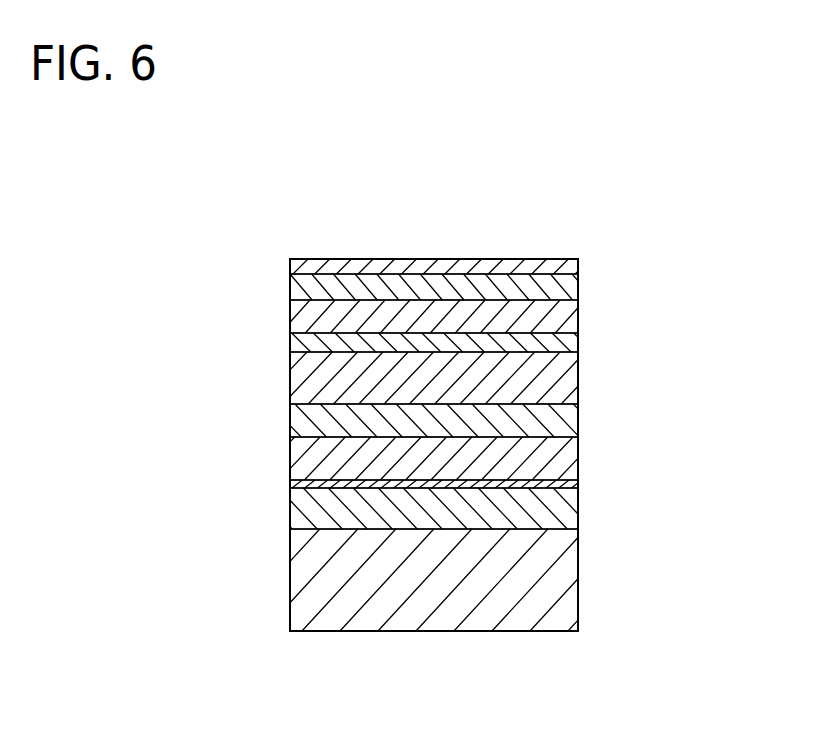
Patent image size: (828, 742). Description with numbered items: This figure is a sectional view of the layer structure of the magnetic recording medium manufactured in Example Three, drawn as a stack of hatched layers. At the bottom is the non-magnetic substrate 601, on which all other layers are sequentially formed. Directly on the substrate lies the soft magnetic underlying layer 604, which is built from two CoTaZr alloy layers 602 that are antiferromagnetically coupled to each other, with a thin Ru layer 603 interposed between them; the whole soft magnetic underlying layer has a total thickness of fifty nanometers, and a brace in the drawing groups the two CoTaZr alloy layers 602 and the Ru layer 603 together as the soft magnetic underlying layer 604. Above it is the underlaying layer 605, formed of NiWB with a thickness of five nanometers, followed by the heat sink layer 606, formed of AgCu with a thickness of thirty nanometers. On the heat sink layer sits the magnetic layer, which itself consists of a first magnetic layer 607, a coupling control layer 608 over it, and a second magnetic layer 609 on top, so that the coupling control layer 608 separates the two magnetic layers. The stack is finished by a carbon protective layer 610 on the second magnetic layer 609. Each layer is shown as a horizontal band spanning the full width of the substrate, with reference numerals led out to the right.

The non-magnetic substrate 601 is at (560, 577).
The CoTaZr alloy 602 is at (568, 459).
The Ru layer 603 is at (565, 484).
The soft magnetic underlying layer 604 is at (522, 474).
The underlaying layer 605 is at (568, 420).
The heat sink layer 606 is at (570, 378).
The first magnetic layer 607 is at (572, 345).
The coupling control layer 608 is at (572, 318).
The second magnetic layer 609 is at (572, 287).
The carbon protective layer 610 is at (572, 267).